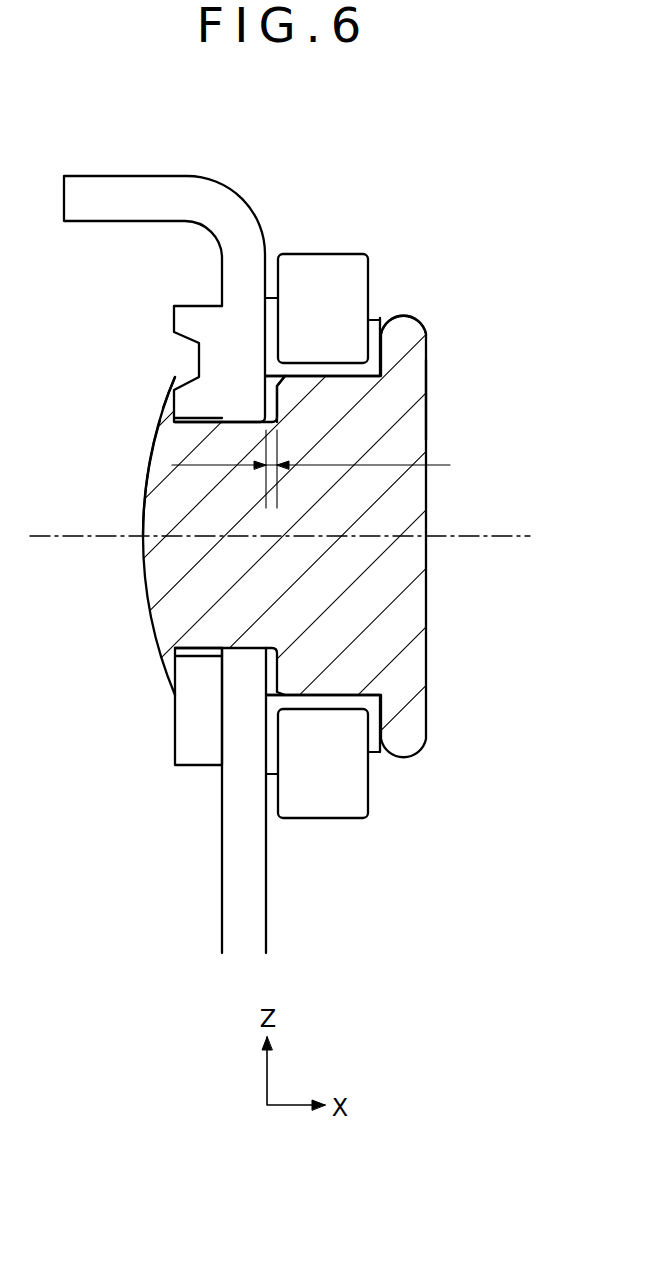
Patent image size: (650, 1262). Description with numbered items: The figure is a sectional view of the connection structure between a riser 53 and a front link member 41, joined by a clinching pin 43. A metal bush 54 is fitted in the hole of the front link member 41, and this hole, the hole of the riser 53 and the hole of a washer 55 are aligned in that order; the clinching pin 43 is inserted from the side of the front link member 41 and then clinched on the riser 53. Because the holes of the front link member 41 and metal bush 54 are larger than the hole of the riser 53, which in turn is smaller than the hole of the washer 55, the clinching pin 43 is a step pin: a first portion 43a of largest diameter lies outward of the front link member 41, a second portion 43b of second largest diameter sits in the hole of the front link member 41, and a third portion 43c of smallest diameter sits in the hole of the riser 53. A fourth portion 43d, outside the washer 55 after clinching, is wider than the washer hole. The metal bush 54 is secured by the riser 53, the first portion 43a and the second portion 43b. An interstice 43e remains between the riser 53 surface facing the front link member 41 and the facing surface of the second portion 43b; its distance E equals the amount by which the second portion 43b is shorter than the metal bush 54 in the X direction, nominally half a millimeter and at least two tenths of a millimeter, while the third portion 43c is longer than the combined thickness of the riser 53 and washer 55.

The front link member 41 is at (337, 254).
The clinching pin 43 is at (426, 610).
The first portion 43a is at (407, 345).
The second portion 43b is at (335, 392).
The third portion 43c is at (235, 436).
The fourth portion 43d is at (162, 408).
The interstice 43e is at (272, 408).
The riser 53 is at (175, 176).
The metal bush 54 is at (375, 327).
The washer 55 is at (174, 325).
The distance of the interstice E is at (321, 469).